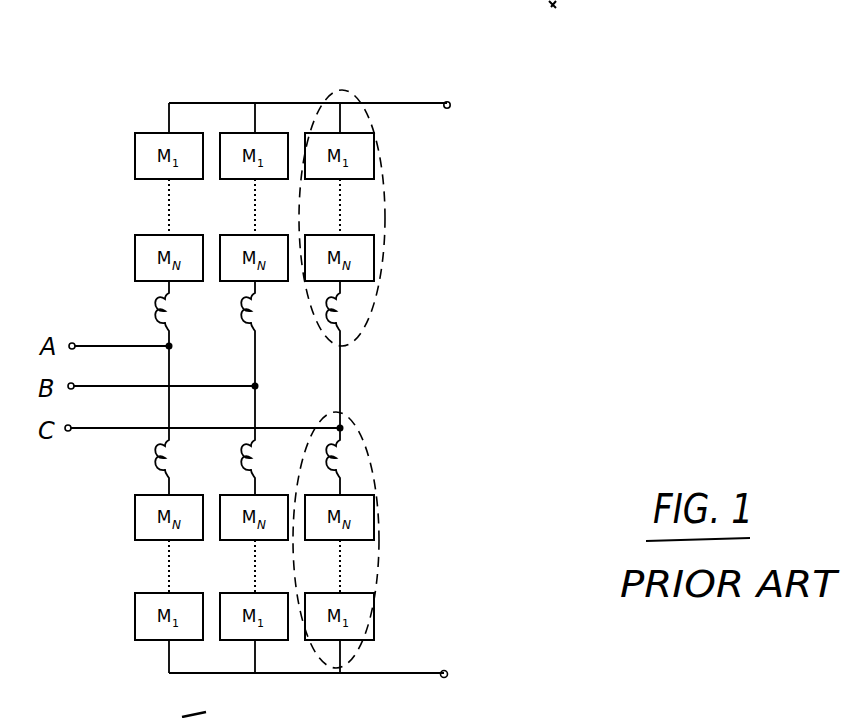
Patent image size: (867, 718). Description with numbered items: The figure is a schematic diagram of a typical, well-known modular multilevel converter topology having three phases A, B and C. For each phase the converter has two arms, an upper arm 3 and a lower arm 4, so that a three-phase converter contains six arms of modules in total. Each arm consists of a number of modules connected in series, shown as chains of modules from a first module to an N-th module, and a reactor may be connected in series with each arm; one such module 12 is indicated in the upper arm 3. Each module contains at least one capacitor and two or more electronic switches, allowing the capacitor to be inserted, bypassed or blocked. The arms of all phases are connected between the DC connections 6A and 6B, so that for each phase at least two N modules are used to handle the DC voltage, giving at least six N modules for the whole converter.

The upper arm 3 is at (384, 259).
The lower arm 4 is at (384, 506).
The submodule M_N 12 is at (376, 242).
The DC connection 6A is at (449, 96).
The DC connection 6B is at (446, 663).